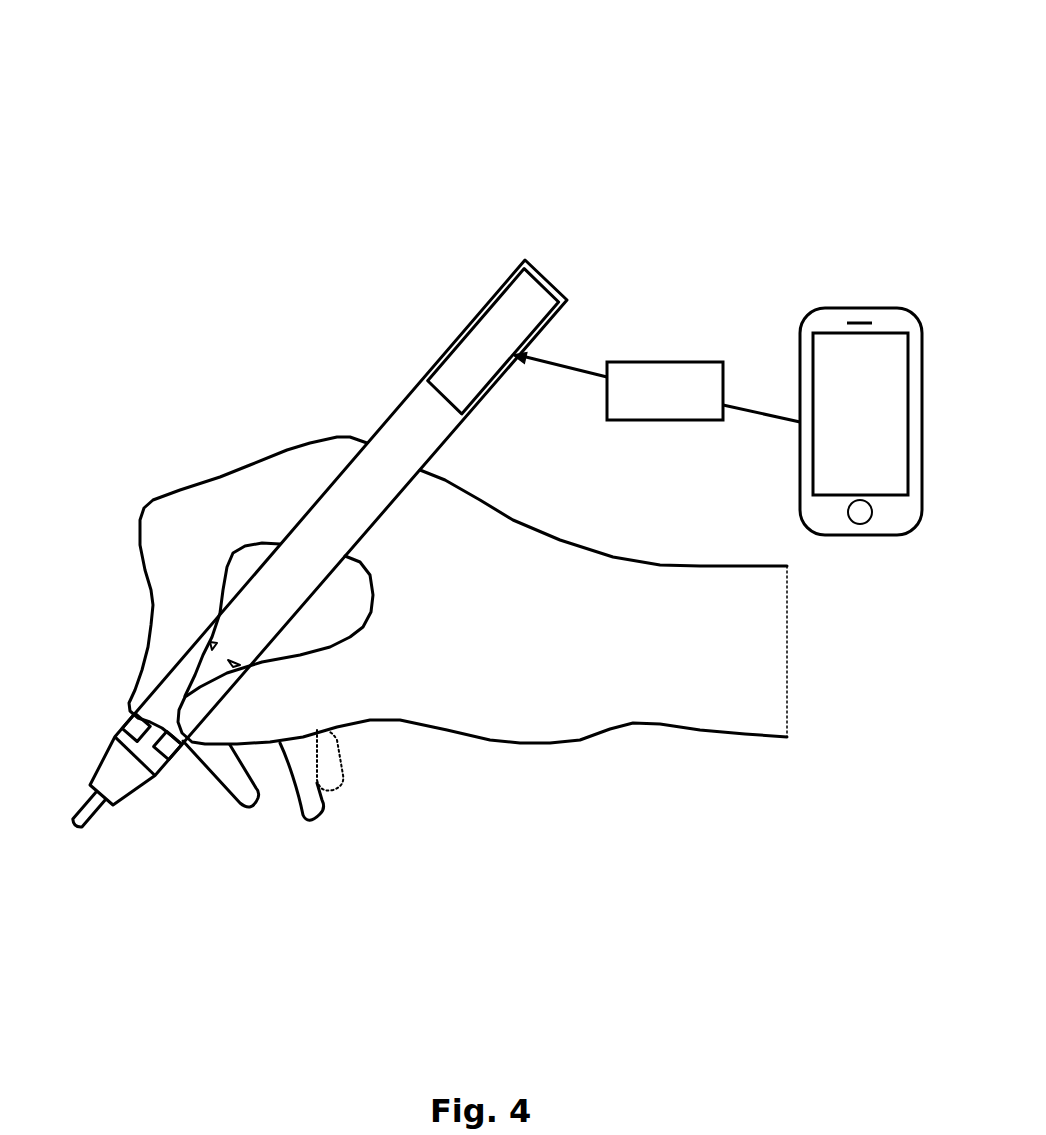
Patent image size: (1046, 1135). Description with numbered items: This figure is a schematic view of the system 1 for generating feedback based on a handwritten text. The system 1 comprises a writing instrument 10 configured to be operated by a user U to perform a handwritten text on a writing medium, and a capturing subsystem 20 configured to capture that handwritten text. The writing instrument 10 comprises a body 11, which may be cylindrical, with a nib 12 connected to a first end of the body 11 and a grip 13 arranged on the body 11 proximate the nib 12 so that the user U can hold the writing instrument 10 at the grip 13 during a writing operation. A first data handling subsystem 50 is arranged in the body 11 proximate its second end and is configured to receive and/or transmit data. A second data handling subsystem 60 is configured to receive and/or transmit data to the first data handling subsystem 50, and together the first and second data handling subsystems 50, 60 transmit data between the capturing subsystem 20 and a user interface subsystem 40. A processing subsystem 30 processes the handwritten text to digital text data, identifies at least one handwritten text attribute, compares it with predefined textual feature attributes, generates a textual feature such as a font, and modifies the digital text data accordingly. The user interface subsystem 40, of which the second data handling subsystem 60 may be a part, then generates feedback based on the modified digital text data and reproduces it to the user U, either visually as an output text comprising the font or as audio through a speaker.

The system 1 is at (253, 130).
The writing instrument 10 is at (319, 555).
The body 11 is at (435, 435).
The nib 12 is at (113, 792).
The grip 13 is at (132, 702).
The capturing subsystem 20 is at (179, 774).
The processing subsystem 30 is at (838, 436).
The user interface subsystem 40 is at (821, 299).
The first data handling subsystem 50 is at (496, 323).
The second data handling subsystem 60 is at (669, 348).
The user U is at (625, 718).